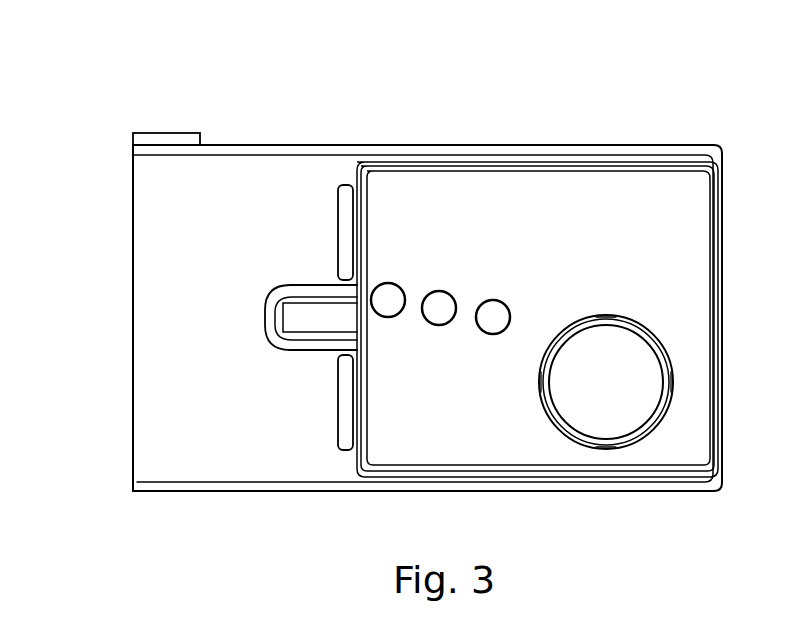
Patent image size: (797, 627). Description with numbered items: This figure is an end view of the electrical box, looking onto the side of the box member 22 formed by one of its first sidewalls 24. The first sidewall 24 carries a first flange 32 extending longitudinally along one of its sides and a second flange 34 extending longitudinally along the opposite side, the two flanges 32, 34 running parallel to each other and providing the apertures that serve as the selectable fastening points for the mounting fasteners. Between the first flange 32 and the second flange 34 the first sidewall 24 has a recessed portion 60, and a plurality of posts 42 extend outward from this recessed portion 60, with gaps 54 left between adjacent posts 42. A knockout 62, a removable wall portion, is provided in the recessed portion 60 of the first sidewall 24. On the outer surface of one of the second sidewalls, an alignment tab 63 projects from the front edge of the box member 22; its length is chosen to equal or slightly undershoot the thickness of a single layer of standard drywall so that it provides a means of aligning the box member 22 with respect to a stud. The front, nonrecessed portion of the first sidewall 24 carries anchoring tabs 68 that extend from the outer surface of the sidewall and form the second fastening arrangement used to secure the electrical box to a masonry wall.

The box member 22 is at (116, 102).
The first sidewall 24 is at (333, 168).
The first flange 32 is at (537, 472).
The second flange 34 is at (574, 160).
The posts 42 is at (388, 300).
The gaps 54 is at (412, 300).
The recessed portion 60 is at (627, 269).
The knockout 62 is at (620, 390).
The alignment tab 63 is at (165, 133).
The anchoring tabs 68 is at (340, 233).